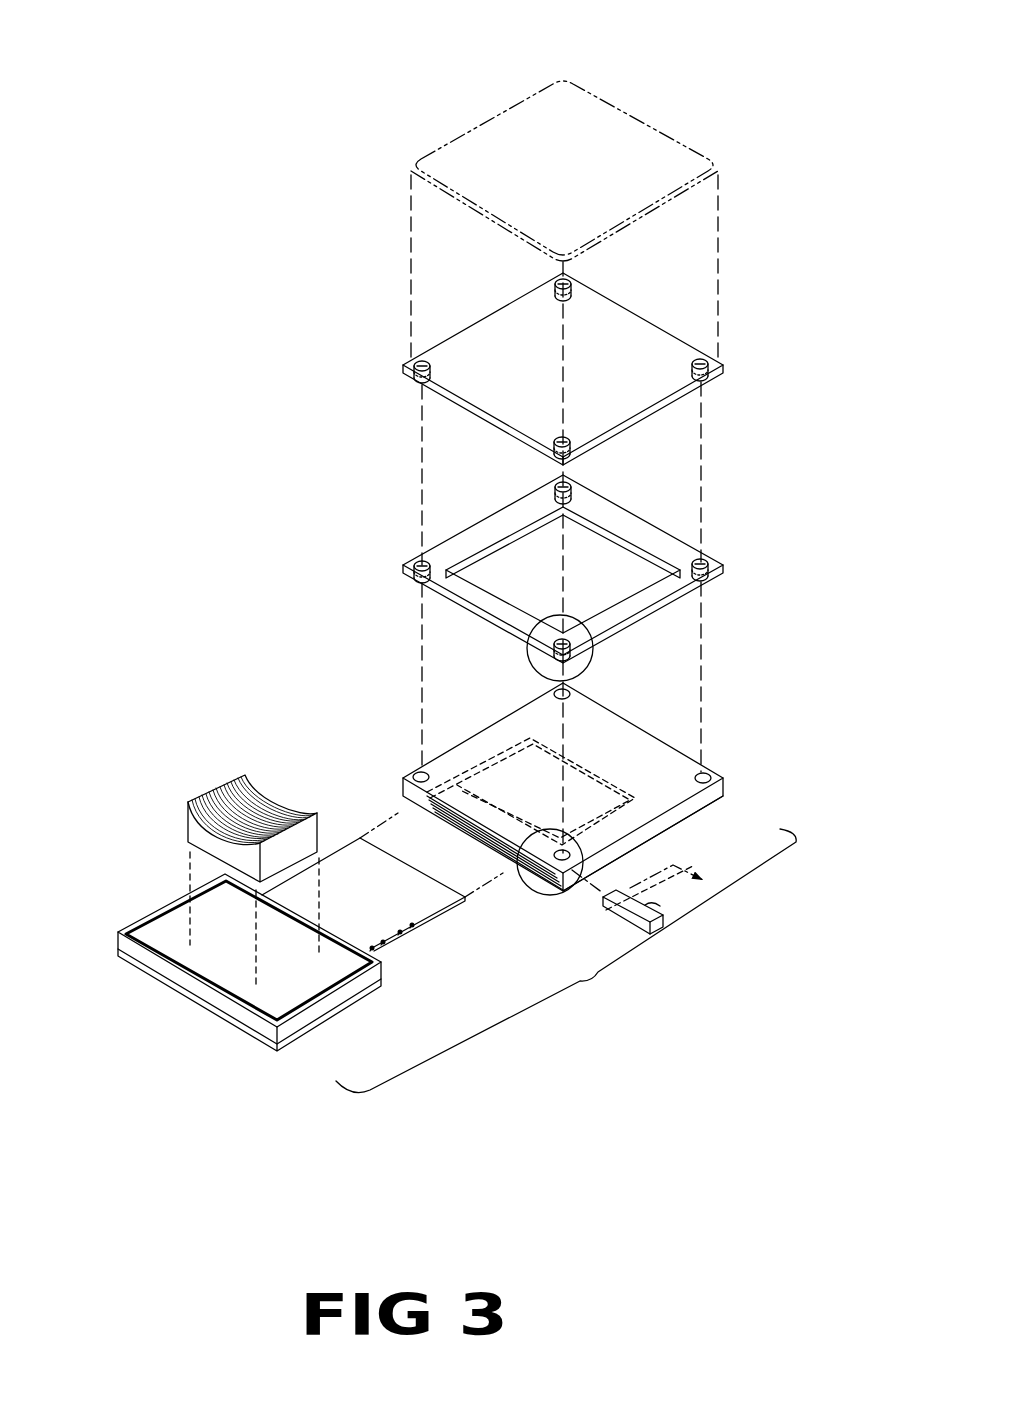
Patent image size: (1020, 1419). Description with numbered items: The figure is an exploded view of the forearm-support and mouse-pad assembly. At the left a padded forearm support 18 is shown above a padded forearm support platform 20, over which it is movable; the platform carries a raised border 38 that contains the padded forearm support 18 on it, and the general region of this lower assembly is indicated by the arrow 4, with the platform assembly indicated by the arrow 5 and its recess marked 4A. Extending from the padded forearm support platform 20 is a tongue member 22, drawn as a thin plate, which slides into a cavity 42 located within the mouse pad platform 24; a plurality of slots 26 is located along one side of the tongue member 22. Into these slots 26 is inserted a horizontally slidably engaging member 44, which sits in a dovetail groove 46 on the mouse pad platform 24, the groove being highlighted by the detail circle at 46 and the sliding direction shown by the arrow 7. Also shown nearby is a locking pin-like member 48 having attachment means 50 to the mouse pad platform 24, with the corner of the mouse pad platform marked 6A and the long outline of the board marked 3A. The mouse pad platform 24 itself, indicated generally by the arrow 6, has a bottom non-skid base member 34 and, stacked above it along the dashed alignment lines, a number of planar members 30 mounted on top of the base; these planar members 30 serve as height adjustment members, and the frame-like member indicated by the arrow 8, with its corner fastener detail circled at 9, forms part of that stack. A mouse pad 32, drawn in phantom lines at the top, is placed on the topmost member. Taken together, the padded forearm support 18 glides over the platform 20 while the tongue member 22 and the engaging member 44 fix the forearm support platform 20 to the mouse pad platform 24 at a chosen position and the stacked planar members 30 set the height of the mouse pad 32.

The base board 3A is at (566, 961).
The lower assembly 4 is at (147, 721).
The tray recess 4A is at (180, 965).
The housing tray assembly 5 is at (132, 909).
The middle assembly 6 is at (379, 677).
The plate corner 6A is at (593, 858).
The cable direction 7 is at (583, 912).
The frame 8 is at (457, 538).
The screw detail 9 is at (593, 645).
The padded forearm support 18 is at (248, 786).
The padded forearm support platform 20 is at (242, 1017).
The tongue member 22 is at (355, 869).
The mouse pad platform 24 is at (718, 786).
The slots 26 is at (388, 940).
The planar members 30 is at (722, 371).
The mouse pad 32 is at (558, 115).
The bottom non-skid base member 34 is at (722, 800).
The raised border 38 is at (317, 997).
The cavity 42 is at (458, 827).
The horizontally slidably engaging member 44 is at (660, 930).
The dovetail groove 46 is at (517, 872).
The locking pin-like member 48 is at (687, 890).
The attachment means 50 is at (710, 887).